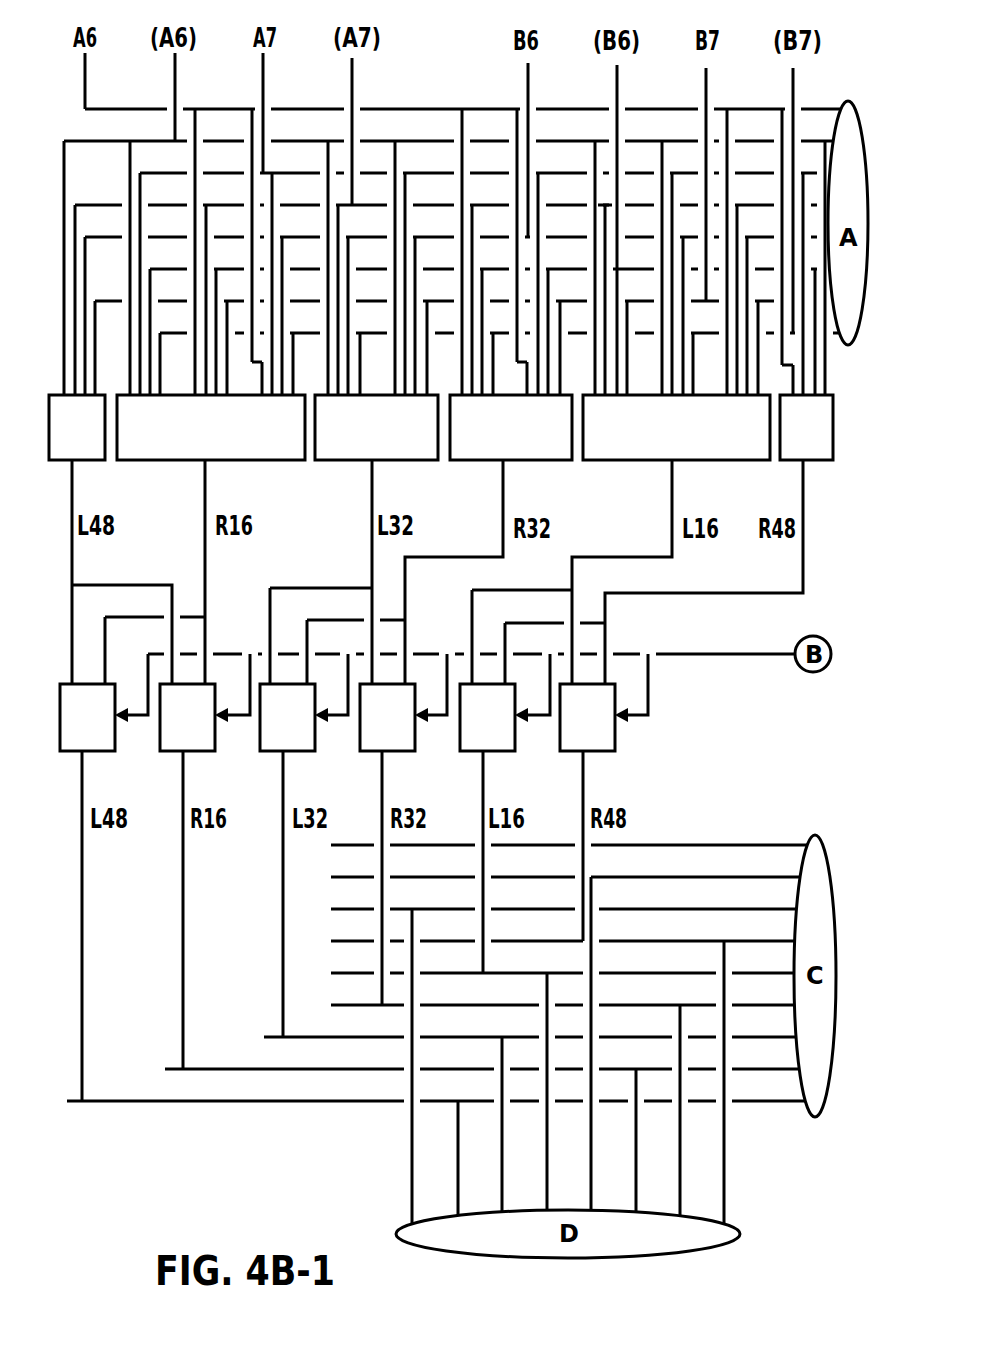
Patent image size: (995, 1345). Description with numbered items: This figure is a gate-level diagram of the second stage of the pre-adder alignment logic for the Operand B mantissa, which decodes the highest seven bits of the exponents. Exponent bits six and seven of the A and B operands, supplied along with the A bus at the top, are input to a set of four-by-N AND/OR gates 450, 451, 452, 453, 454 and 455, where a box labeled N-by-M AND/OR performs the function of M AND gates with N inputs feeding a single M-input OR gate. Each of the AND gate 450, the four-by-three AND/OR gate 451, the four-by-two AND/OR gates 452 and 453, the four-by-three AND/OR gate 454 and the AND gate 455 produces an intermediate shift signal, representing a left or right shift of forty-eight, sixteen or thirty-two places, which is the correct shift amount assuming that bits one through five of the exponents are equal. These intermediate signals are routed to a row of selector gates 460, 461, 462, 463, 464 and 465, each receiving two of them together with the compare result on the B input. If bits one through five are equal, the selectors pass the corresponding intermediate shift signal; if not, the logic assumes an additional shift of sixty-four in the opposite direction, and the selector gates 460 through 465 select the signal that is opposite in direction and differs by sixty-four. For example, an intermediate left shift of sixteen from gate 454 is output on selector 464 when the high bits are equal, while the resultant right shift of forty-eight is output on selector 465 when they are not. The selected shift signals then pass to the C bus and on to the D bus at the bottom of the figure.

The AND gate 450 is at (83, 460).
The 4×3 AND/OR gate 451 is at (253, 460).
The 4×2 AND/OR gate 452 is at (398, 461).
The 4×2 AND/OR gate 453 is at (530, 461).
The 4×3 AND/OR gate 454 is at (742, 461).
The AND gate 455 is at (820, 461).
The selector gate 460 is at (98, 752).
The selector gate 461 is at (198, 752).
The selector gate 462 is at (298, 752).
The selector gate 463 is at (398, 752).
The selector gate 464 is at (498, 752).
The selector gate 465 is at (598, 752).